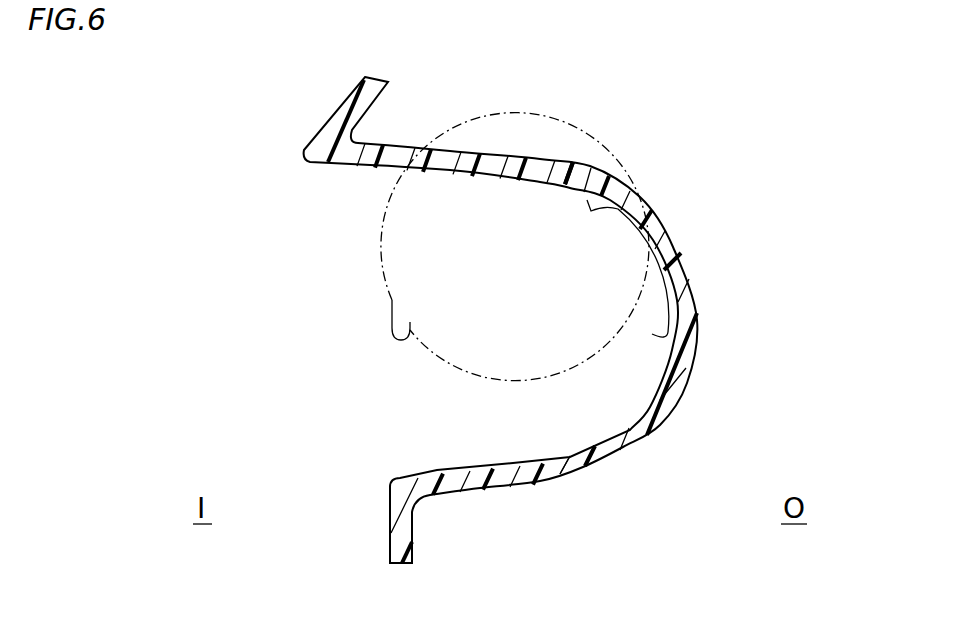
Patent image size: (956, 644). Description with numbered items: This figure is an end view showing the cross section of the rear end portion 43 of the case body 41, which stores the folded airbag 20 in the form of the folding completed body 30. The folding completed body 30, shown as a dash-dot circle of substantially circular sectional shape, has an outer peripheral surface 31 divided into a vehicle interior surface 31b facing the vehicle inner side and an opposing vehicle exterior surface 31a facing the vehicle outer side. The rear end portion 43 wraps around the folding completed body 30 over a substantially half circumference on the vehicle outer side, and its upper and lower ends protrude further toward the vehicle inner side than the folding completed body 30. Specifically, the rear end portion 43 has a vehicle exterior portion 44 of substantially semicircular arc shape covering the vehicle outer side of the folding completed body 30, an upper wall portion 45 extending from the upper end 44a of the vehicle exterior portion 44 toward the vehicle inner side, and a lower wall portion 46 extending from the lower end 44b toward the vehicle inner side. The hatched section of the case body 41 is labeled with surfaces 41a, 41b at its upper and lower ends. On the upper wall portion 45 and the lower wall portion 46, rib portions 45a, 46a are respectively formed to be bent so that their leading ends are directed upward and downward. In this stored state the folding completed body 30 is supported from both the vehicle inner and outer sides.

The airbag 20 is at (437, 273).
The folding completed body 30 is at (412, 382).
The outer peripheral surface 31 is at (519, 270).
The vehicle exterior surface 31a is at (653, 278).
The vehicle interior surface 31b is at (387, 302).
The case body 41 is at (502, 352).
The first lip surface 41a is at (578, 172).
The second lip surface 41b is at (567, 478).
The rear end portion 43 is at (557, 132).
The vehicle exterior portion 44 is at (683, 257).
The upper end 44a is at (671, 154).
The lower end 44b is at (583, 530).
The upper wall portion 45 is at (436, 131).
The rib portion 45a is at (333, 117).
The lower wall portion 46 is at (477, 504).
The rib portion 46a is at (402, 542).